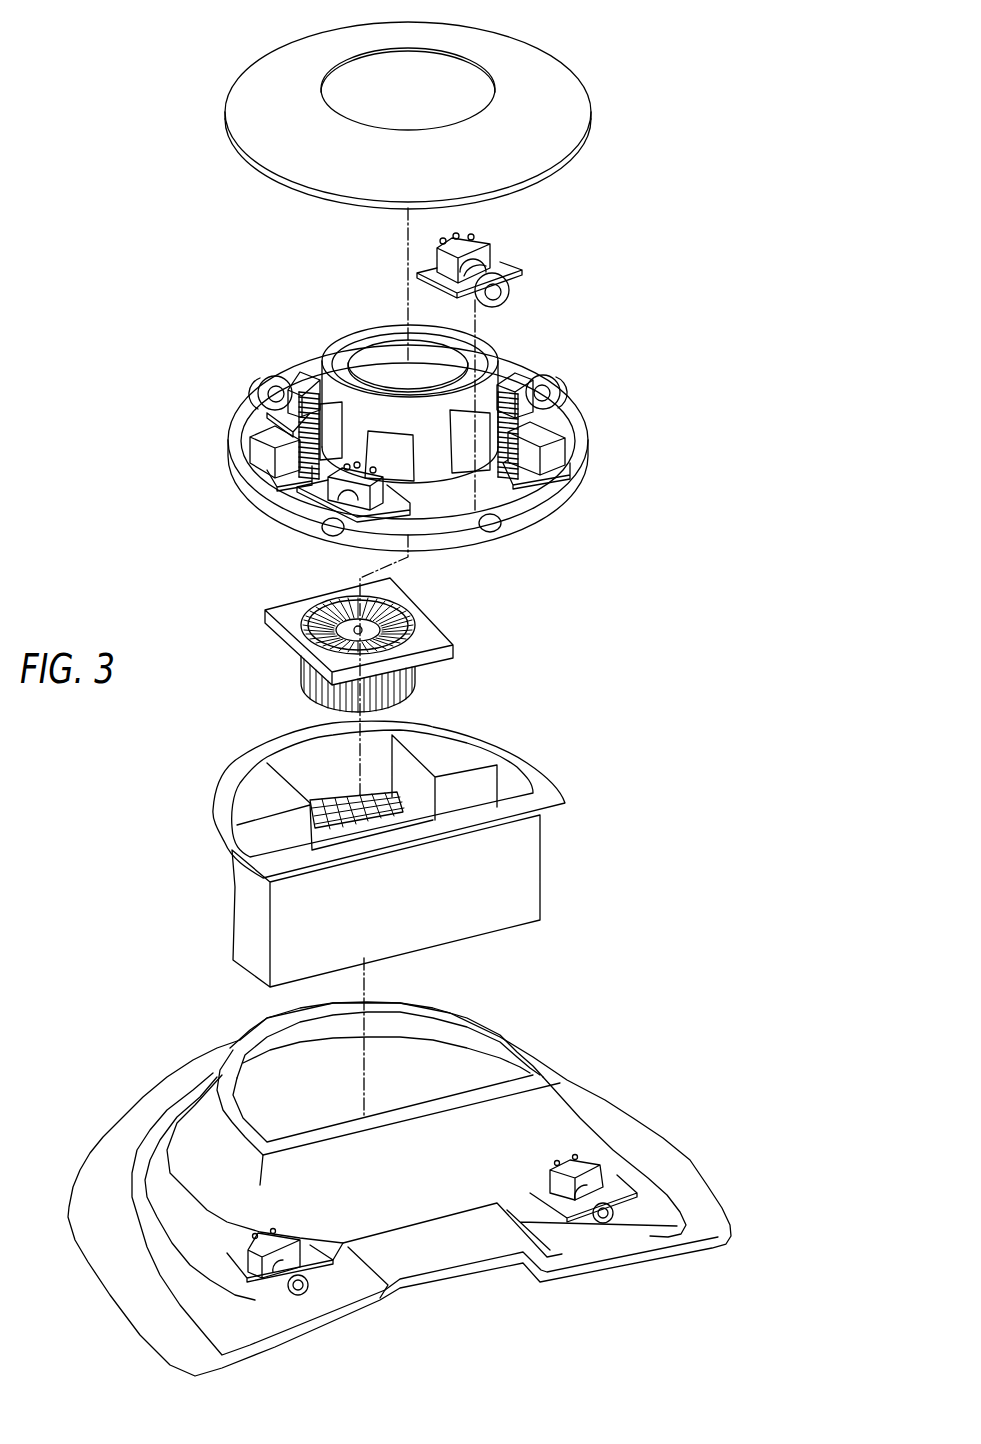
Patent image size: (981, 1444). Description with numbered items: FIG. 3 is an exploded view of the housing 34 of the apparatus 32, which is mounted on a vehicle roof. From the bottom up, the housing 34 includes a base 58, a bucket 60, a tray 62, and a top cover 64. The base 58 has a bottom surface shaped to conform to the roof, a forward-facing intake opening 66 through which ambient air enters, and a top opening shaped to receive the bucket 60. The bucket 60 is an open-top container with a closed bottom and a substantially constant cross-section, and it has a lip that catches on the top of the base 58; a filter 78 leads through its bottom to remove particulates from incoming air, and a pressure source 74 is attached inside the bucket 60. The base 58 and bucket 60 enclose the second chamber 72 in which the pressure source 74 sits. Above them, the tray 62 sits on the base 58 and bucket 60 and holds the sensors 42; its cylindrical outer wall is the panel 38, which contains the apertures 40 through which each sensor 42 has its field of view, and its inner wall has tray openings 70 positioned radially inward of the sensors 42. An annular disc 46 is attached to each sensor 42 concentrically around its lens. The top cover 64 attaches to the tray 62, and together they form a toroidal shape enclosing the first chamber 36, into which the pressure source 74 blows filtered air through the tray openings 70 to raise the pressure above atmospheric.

The apparatus 32 is at (568, 607).
The housing 34 is at (207, 52).
The first chamber 36 is at (487, 493).
The panel 38 is at (587, 460).
The aperture 40 is at (333, 532).
The sensor 42 is at (487, 240).
The annular disc 46 is at (503, 294).
The base 58 is at (399, 1189).
The bucket 60 is at (415, 841).
The tray 62 is at (247, 500).
The top cover 64 is at (550, 90).
The intake opening 66 is at (464, 1292).
The tray openings 70 is at (463, 427).
The second chamber 72 is at (343, 833).
The pressure source 74 is at (445, 627).
The filter 78 is at (470, 800).